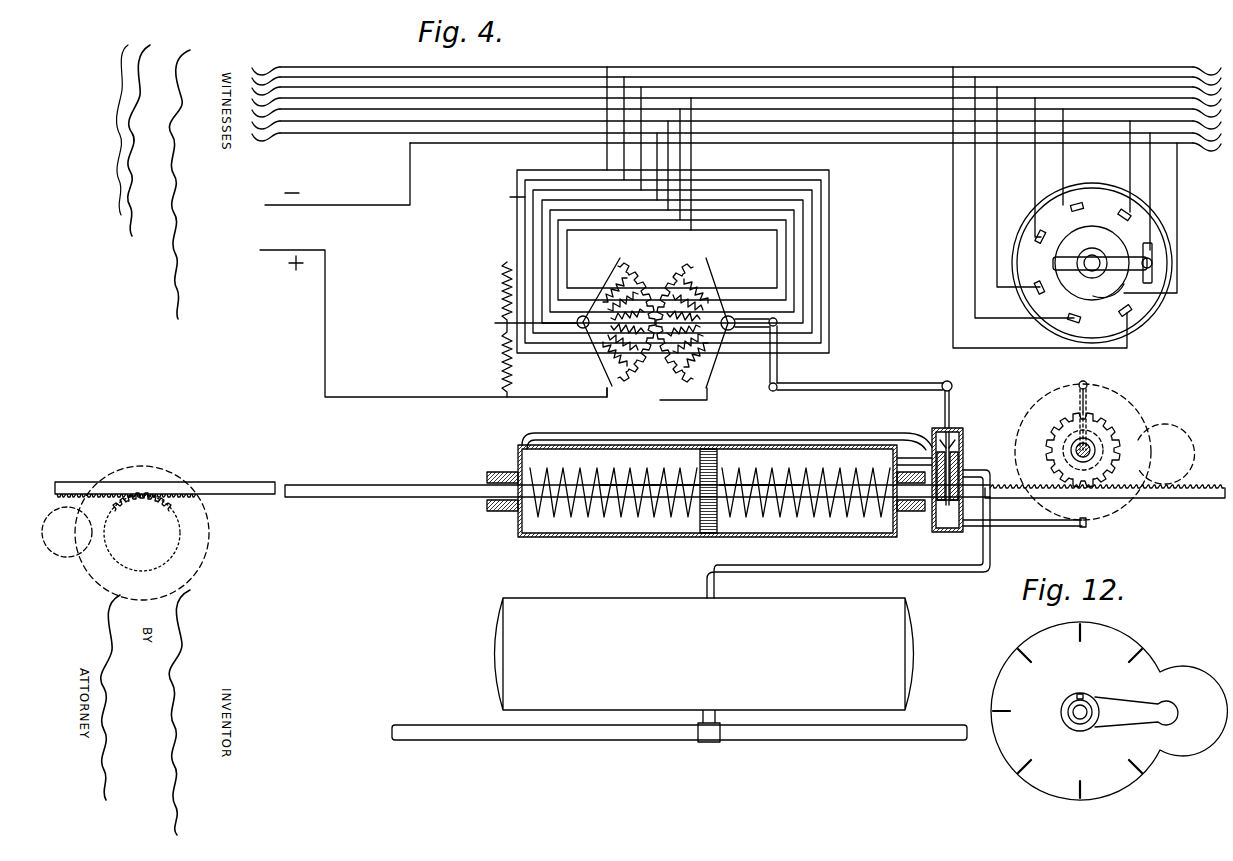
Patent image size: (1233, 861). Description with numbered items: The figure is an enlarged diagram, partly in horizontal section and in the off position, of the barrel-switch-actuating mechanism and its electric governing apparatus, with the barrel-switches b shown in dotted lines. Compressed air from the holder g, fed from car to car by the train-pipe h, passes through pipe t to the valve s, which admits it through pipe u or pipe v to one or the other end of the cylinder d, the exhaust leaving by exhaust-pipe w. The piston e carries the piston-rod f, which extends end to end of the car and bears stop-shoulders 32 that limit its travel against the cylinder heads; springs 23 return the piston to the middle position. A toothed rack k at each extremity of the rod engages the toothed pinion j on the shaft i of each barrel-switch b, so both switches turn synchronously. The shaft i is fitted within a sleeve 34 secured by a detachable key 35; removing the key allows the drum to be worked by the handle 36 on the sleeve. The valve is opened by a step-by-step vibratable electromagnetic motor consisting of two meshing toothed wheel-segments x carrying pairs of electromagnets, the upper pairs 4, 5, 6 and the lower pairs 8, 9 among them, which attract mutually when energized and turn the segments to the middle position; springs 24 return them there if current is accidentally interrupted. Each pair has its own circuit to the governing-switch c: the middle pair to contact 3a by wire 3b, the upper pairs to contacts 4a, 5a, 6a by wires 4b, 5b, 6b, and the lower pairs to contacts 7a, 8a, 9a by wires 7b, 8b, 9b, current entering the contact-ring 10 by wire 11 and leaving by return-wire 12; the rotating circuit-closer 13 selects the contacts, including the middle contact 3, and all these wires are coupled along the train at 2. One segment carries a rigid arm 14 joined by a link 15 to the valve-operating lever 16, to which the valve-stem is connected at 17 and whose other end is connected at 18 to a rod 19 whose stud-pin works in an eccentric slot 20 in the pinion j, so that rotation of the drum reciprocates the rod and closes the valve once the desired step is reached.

In FIG. 4, the coupling of wires along the train 2 is at (726, 220).
In FIG. 4, the middle contact 3 is at (688, 322).
In FIG. 4, the contact 3a is at (1152, 250).
In FIG. 4, the circuit-wire 3b is at (856, 150).
In FIG. 4, the upper magnets 4 is at (655, 322).
In FIG. 4, the contact 4a is at (1124, 213).
In FIG. 4, the circuit-wire 4b is at (794, 232).
In FIG. 4, the upper magnets 5 is at (611, 317).
In FIG. 4, the contact 5a is at (1078, 205).
In FIG. 4, the circuit-wire 5b is at (786, 250).
In FIG. 4, the upper magnets 6 is at (655, 279).
In FIG. 4, the contact 6a is at (1042, 236).
In FIG. 4, the circuit-wire 6b is at (777, 250).
In FIG. 4, the contact 7a is at (1131, 312).
In FIG. 4, the circuit-wire 7b is at (953, 268).
In FIG. 4, the lower magnets 8 is at (662, 406).
In FIG. 4, the contact 8a is at (1078, 326).
In FIG. 4, the circuit-wire 8b is at (975, 217).
In FIG. 4, the lower magnets 9 is at (707, 380).
In FIG. 4, the contact 9a is at (1038, 295).
In FIG. 4, the circuit-wire 9b is at (997, 244).
In FIG. 4, the contact-ring 10 is at (1124, 284).
In FIG. 4, the circuit-wire 11 is at (1177, 184).
In FIG. 4, the return-wire 12 is at (672, 362).
In FIG. 4, the rotating circuit-closer 13 is at (1152, 264).
In FIG. 4, the rigid arm 14 is at (752, 330).
In FIG. 4, the link 15 is at (779, 366).
In FIG. 4, the valve-operating lever 16 is at (885, 383).
In FIG. 4, the valve-stem connection 17 is at (943, 391).
In FIG. 4, the lever-to-rod connection 18 is at (1088, 386).
In FIG. 4, the rod or bar 19 is at (1088, 398).
In FIG. 4, the eccentric slot 20 is at (1062, 449).
In FIG. 4, the springs 23 is at (838, 517).
In FIG. 4, the springs 24 is at (503, 372).
In FIG. 4, the stop-shoulders 32 is at (780, 485).
In FIG. 12, the sleeve 34 is at (1072, 702).
In FIG. 12, the key 35 is at (1071, 723).
In FIG. 12, the handle 36 is at (1130, 705).
In FIG. 4, the barrel-switch b is at (200, 568).
In FIG. 12, the barrel-switch b is at (1150, 652).
In FIG. 4, the circuit closing and opening switch c is at (1148, 318).
In FIG. 4, the cylinder d is at (625, 537).
In FIG. 4, the piston e is at (703, 533).
In FIG. 4, the piston-rod f is at (422, 497).
In FIG. 4, the compressed-air holder g is at (897, 652).
In FIG. 4, the train-pipe h is at (940, 727).
In FIG. 4, the shaft i is at (1092, 446).
In FIG. 12, the shaft i is at (1088, 700).
In FIG. 4, the toothed pinion j is at (618, 497).
In FIG. 4, the toothed rack k is at (180, 500).
In FIG. 4, the valve s is at (964, 458).
In FIG. 4, the pipe t is at (990, 570).
In FIG. 4, the pipe u is at (845, 440).
In FIG. 4, the pipe v is at (920, 505).
In FIG. 4, the exhaust-pipe w is at (1040, 523).
In FIG. 4, the segments of toothed wheels x is at (720, 278).